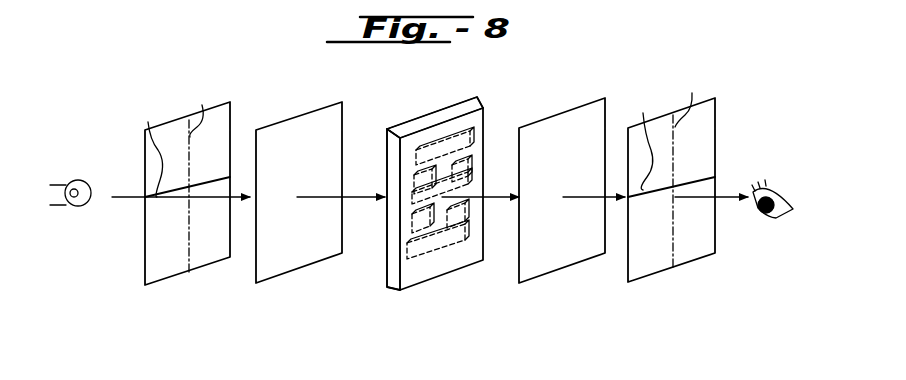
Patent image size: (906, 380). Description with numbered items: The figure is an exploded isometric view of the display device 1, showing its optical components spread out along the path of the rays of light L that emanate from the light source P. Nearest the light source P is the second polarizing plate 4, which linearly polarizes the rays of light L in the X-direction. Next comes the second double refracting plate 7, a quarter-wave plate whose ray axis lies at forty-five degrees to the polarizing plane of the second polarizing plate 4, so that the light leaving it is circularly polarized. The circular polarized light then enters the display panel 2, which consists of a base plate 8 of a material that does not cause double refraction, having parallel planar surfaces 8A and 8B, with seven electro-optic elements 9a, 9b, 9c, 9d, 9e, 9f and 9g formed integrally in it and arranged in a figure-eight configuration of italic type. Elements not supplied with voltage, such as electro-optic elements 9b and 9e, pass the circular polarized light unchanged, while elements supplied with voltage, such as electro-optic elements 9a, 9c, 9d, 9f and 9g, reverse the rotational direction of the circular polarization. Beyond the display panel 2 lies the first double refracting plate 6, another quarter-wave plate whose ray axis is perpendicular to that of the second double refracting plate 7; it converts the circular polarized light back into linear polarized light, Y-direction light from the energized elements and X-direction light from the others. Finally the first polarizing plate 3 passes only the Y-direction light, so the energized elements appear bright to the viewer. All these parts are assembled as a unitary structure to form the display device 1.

The display device 1 is at (421, 218).
The display panel 2 is at (427, 206).
The first polarizing plate 3 is at (652, 270).
The second polarizing plate 4 is at (167, 274).
The first double refracting plate 6 is at (557, 272).
The second double refracting plate 7 is at (280, 274).
The base plate 8 is at (400, 289).
The parallel planar surface 8A is at (436, 127).
The parallel planar surface 8B is at (403, 124).
The electro-optic element 9a is at (455, 145).
The electro-optic element 9b is at (420, 183).
The electro-optic element 9c is at (475, 168).
The electro-optic element 9d is at (413, 203).
The electro-optic element 9e is at (407, 248).
The electro-optic element 9f is at (467, 217).
The electro-optic element 9g is at (460, 247).
The light source P is at (83, 181).
The rays of light L is at (123, 203).